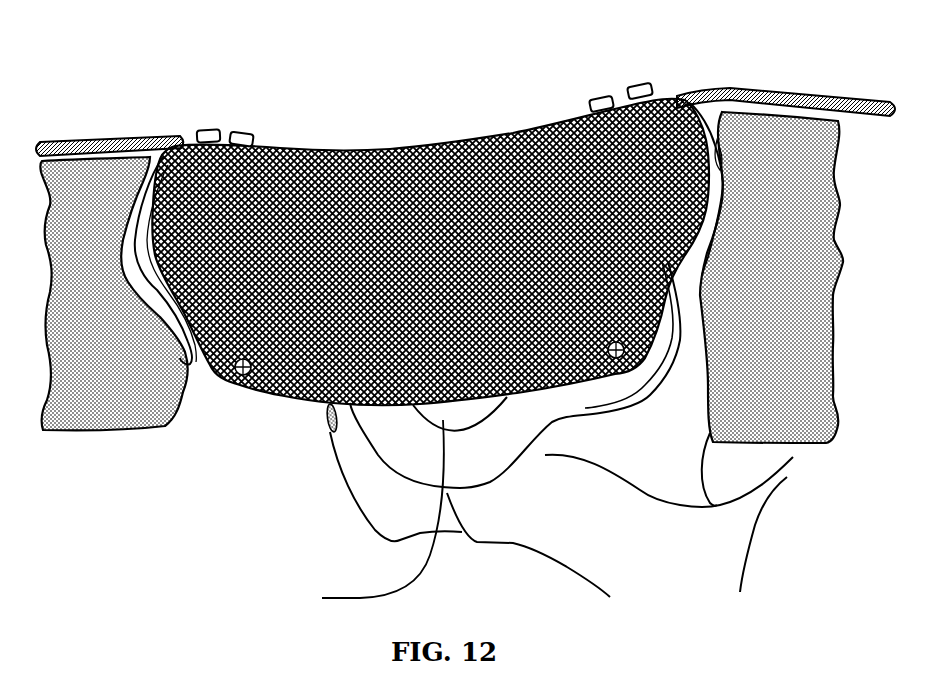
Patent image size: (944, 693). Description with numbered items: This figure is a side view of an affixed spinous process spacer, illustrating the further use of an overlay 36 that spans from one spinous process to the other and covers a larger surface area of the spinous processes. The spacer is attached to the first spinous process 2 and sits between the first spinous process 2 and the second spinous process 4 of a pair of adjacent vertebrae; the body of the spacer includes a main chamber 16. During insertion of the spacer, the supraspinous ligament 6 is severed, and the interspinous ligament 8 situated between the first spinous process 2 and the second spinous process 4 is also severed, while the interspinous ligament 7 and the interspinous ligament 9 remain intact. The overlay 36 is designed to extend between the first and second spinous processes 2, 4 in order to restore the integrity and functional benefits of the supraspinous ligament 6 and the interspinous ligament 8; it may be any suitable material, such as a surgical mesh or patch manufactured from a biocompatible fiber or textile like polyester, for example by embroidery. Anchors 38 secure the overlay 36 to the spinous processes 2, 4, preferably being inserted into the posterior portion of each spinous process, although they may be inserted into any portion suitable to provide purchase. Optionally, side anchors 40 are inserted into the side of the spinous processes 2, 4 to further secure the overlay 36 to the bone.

The first spinous process 2 is at (719, 165).
The second spinous process 4 is at (153, 182).
The supraspinous ligament 6 is at (107, 140).
The interspinous ligament 7 is at (823, 427).
The interspinous ligament 8 is at (328, 432).
The interspinous ligament 9 is at (113, 413).
The main chamber 16 is at (369, 514).
The overlay 36 is at (408, 175).
The anchors 38 is at (204, 130).
The side anchors 40 is at (238, 385).